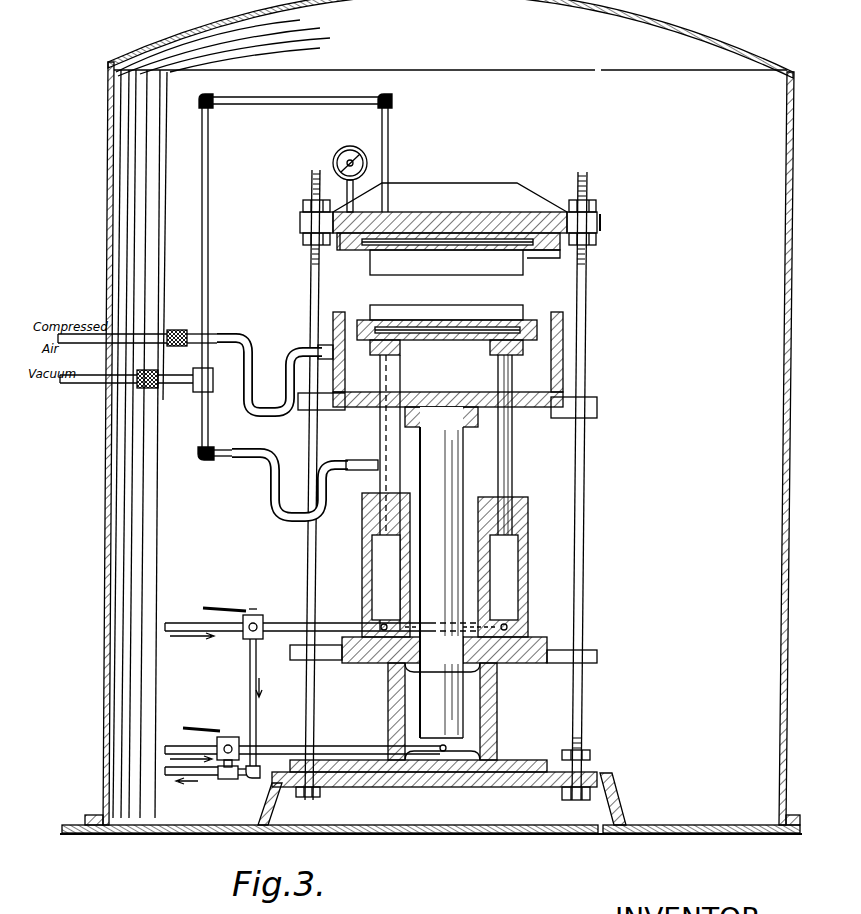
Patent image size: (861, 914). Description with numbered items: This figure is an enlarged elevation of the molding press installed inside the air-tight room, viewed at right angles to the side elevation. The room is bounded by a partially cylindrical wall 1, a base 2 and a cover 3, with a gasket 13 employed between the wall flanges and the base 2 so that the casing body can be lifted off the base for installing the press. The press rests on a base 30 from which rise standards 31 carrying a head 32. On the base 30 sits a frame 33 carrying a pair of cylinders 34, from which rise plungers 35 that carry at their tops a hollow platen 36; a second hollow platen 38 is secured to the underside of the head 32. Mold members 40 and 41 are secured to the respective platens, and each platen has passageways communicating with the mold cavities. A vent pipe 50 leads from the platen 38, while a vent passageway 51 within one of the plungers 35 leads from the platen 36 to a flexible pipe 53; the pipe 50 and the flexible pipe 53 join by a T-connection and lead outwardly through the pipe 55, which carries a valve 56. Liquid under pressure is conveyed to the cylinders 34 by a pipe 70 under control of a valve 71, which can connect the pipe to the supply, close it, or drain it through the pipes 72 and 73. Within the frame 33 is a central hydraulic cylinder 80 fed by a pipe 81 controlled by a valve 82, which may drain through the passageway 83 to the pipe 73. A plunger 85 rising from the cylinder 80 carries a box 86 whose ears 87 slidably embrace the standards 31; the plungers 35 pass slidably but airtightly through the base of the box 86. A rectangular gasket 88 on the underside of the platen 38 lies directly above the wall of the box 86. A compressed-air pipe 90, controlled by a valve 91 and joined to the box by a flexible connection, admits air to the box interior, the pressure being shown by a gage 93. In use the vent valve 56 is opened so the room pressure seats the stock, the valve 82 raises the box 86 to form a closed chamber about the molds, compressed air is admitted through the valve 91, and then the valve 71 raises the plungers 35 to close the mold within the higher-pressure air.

The partially cylindrical wall 1 is at (106, 512).
The base 2 is at (418, 836).
The cover 3 is at (450, 39).
The gasket 13 is at (772, 824).
The base of the mold press 30 is at (615, 797).
The standards 31 is at (311, 549).
The head 32 is at (450, 216).
The frame 33 is at (490, 710).
The cylinders 34 is at (364, 560).
The plungers 35 is at (401, 376).
The hollow platen 36 is at (530, 322).
The hollow platen 38 is at (530, 256).
The mold member 40 is at (465, 306).
The mold member 41 is at (446, 262).
The vent pipe 50 is at (342, 106).
The vent passageway 51 is at (379, 430).
The flexible pipe 53 is at (272, 470).
The pipe 55 is at (170, 374).
The valve 56 is at (148, 389).
The pipe 70 is at (300, 630).
The valve 71 is at (257, 612).
The pipe 72 is at (249, 680).
The pipe 73 is at (204, 779).
The central hydraulic cylinder 80 is at (393, 704).
The pipe 81 is at (279, 740).
The valve 82 is at (218, 726).
The passageway 83 is at (221, 776).
The plunger 85 is at (465, 478).
The box 86 is at (533, 413).
The ears 87 is at (600, 406).
The rectangular gasket 88 is at (338, 250).
The pipe 90 is at (246, 348).
The valve 91 is at (178, 334).
The gage 93 is at (333, 158).